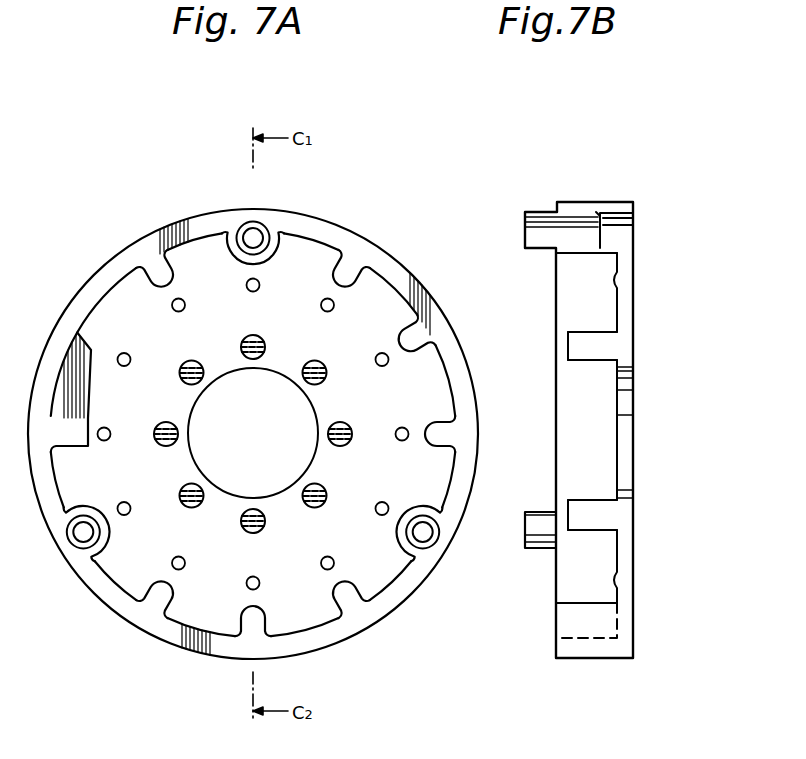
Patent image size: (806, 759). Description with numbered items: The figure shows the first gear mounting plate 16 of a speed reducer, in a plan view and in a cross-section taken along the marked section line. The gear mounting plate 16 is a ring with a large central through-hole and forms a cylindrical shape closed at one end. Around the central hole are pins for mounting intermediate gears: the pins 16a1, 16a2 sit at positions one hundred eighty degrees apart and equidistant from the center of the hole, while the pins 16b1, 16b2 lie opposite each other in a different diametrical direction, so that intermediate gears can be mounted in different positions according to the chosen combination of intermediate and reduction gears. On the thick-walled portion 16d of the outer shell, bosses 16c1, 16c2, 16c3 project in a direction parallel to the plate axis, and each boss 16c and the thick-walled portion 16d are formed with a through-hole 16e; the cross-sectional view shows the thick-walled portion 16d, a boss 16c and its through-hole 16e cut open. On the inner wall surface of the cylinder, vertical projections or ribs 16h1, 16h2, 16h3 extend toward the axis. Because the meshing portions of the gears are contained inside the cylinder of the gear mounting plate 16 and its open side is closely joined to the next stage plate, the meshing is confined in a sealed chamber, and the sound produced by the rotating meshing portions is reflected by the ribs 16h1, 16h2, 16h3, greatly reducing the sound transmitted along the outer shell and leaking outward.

In FIG. 7A, the first gear mounting plate 16 is at (352, 216).
In FIG. 7B, the first gear mounting plate 16 is at (579, 430).
In FIG. 7A, the pin 16a1 is at (250, 340).
In FIG. 7B, the pin 16a1 is at (598, 346).
In FIG. 7A, the pin 16a2 is at (250, 530).
In FIG. 7B, the pin 16a2 is at (610, 515).
In FIG. 7A, the pin 16b1 is at (164, 445).
In FIG. 7A, the pin 16b2 is at (341, 446).
In FIG. 7B, the boss 16c is at (536, 210).
In FIG. 7A, the boss 16c1 is at (243, 222).
In FIG. 7A, the boss 16c2 is at (186, 362).
In FIG. 7B, the boss 16c2 is at (541, 548).
In FIG. 7A, the boss 16c3 is at (440, 527).
In FIG. 7A, the thick-walled portion 16d is at (278, 220).
In FIG. 7B, the thick-walled portion 16d is at (570, 255).
In FIG. 7A, the through-hole 16e is at (256, 232).
In FIG. 7B, the through-hole 16e is at (620, 232).
In FIG. 7A, the rib 16h1 is at (345, 272).
In FIG. 7A, the rib 16h2 is at (408, 340).
In FIG. 7A, the rib 16h3 is at (430, 434).